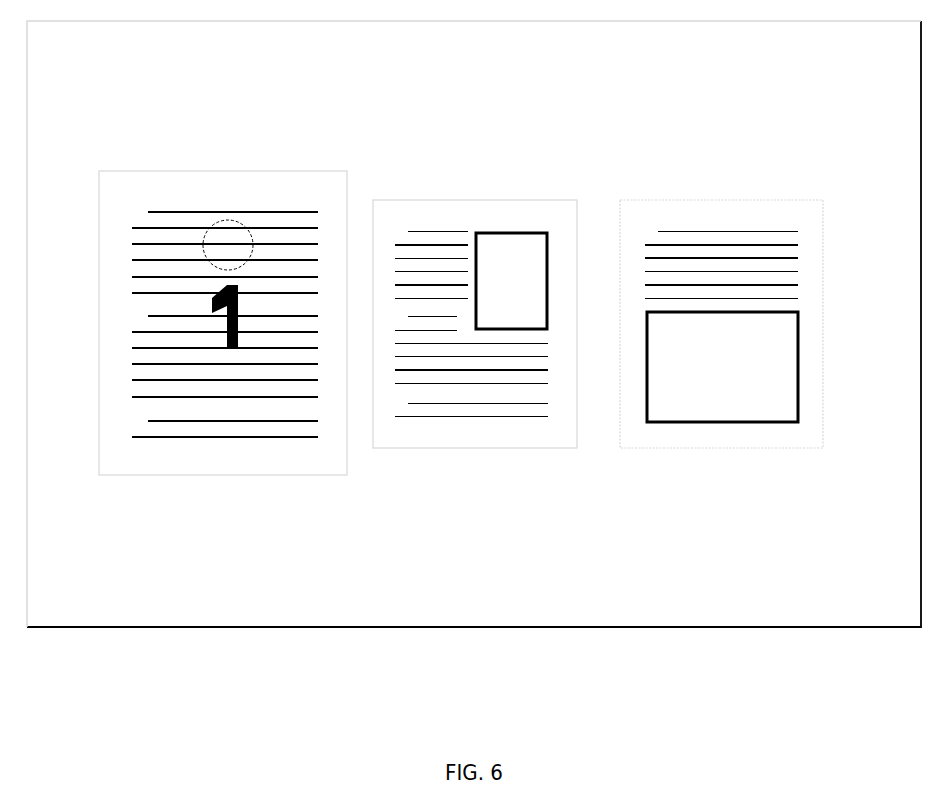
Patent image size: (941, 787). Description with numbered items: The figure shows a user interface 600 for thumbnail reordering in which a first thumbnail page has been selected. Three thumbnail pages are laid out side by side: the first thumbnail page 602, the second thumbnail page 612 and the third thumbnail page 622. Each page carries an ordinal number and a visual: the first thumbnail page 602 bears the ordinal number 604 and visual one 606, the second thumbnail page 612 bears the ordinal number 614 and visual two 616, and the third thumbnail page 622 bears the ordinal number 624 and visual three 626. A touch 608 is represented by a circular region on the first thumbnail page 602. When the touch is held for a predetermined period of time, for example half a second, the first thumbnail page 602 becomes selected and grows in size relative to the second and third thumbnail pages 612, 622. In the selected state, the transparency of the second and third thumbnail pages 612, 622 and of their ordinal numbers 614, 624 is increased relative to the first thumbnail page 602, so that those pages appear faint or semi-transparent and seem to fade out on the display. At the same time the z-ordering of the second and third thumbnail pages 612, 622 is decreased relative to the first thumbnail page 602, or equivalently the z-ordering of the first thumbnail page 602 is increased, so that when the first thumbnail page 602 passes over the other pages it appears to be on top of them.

The user interface 600 is at (474, 324).
The first thumbnail page 602 is at (265, 171).
The ordinal number 604 is at (230, 348).
The visual one 606 is at (152, 185).
The touch 608 is at (228, 245).
The second thumbnail page 612 is at (510, 200).
The ordinal number 614 is at (472, 328).
The visual two 616 is at (429, 218).
The third thumbnail page 622 is at (758, 200).
The ordinal number 624 is at (730, 422).
The visual three 626 is at (678, 213).